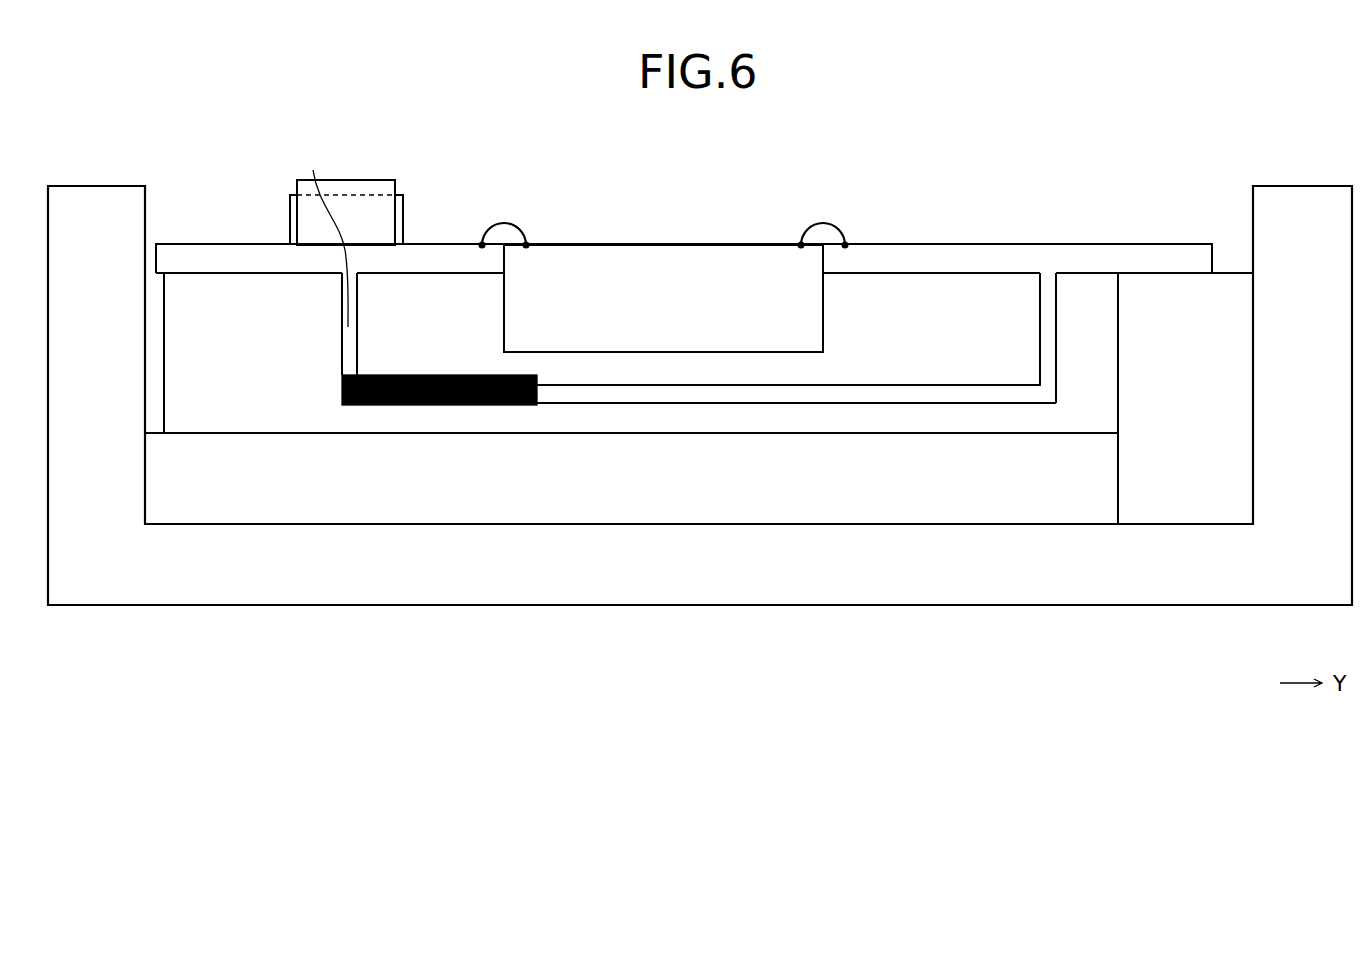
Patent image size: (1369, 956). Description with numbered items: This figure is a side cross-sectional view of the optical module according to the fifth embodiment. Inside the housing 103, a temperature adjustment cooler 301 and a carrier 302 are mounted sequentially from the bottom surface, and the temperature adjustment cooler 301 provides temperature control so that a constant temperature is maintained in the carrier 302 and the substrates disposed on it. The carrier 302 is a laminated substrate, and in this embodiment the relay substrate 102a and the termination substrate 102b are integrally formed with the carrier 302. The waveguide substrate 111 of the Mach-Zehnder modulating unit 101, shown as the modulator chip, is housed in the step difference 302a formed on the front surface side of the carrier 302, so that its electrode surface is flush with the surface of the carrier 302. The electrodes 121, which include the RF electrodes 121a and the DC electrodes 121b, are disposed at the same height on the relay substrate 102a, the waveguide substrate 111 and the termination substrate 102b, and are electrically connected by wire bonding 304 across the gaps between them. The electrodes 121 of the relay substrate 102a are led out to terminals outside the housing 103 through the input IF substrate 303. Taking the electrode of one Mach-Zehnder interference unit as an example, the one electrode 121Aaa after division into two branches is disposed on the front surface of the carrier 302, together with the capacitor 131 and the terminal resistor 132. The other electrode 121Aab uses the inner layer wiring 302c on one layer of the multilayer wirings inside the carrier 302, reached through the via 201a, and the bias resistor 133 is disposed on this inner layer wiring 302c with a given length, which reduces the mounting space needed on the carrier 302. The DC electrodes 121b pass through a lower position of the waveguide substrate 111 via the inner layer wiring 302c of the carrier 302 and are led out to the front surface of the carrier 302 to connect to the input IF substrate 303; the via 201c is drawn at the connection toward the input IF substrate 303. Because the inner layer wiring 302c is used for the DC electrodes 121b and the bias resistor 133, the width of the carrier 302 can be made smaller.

The Mach-Zehnder modulating unit 101 is at (663, 261).
The waveguide substrate 111 is at (662, 290).
The relay substrate 102a is at (1081, 292).
The termination substrate 102b is at (198, 343).
The housing 103 is at (1068, 595).
The electrodes 121 is at (684, 251).
The RF electrodes 121a is at (1086, 205).
The DC electrodes 121b is at (962, 258).
The one electrode 121Aaa is at (253, 253).
The other electrode 121Aab is at (340, 378).
The capacitor 131 is at (375, 180).
The terminal resistor 132 is at (288, 210).
The bias resistor 133 is at (424, 375).
The via 201a is at (313, 170).
The wiring 201c is at (1048, 352).
The temperature adjustment cooler 301 is at (918, 487).
The carrier 302 is at (613, 426).
The step difference 302a is at (780, 353).
The inner layer wiring 302c is at (755, 397).
The input IF substrate 303 is at (1192, 487).
The wire bonding 304 is at (505, 225).